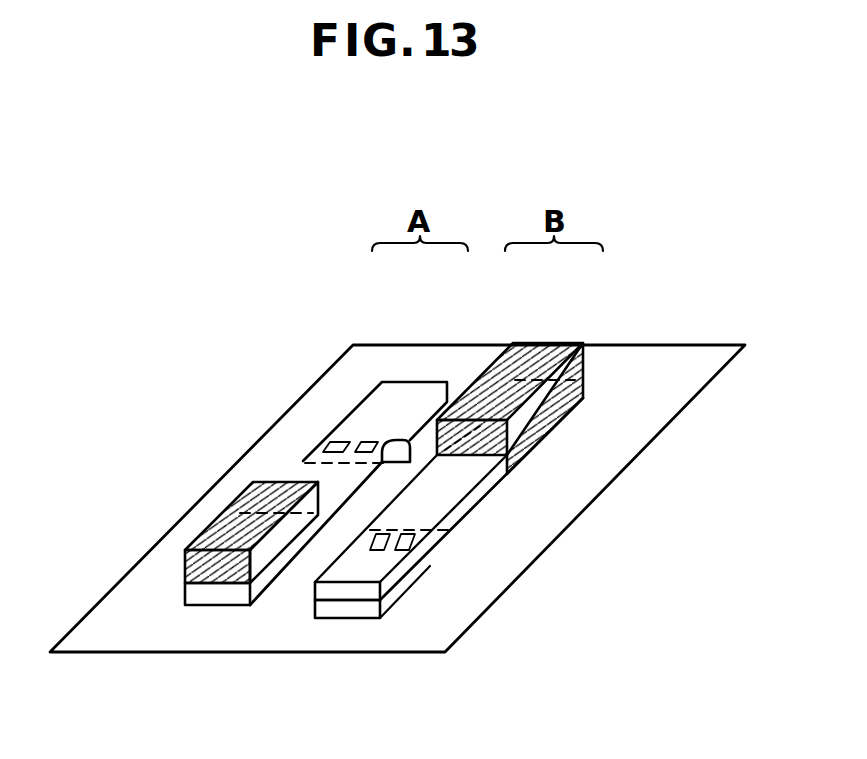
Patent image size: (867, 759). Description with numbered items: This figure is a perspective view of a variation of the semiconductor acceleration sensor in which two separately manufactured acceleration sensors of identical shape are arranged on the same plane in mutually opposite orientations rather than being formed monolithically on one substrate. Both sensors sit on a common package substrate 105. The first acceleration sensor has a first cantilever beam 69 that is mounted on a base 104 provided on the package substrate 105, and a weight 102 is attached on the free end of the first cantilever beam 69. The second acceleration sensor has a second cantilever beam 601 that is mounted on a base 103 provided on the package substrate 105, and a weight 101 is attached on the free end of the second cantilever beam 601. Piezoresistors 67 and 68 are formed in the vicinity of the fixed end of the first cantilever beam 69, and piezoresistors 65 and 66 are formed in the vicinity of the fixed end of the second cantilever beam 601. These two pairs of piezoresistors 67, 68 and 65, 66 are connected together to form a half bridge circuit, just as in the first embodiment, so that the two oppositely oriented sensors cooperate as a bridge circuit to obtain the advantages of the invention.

The package substrate 105 is at (648, 433).
The weight 101 is at (557, 344).
The base 104 is at (451, 416).
The weight 102 is at (250, 490).
The first cantilever beam 69 is at (313, 443).
The piezoresistor 68 is at (335, 442).
The piezoresistor 67 is at (362, 447).
The piezoresistor 66 is at (385, 530).
The piezoresistor 65 is at (413, 531).
The second cantilever beam 601 is at (430, 535).
The base 103 is at (358, 612).